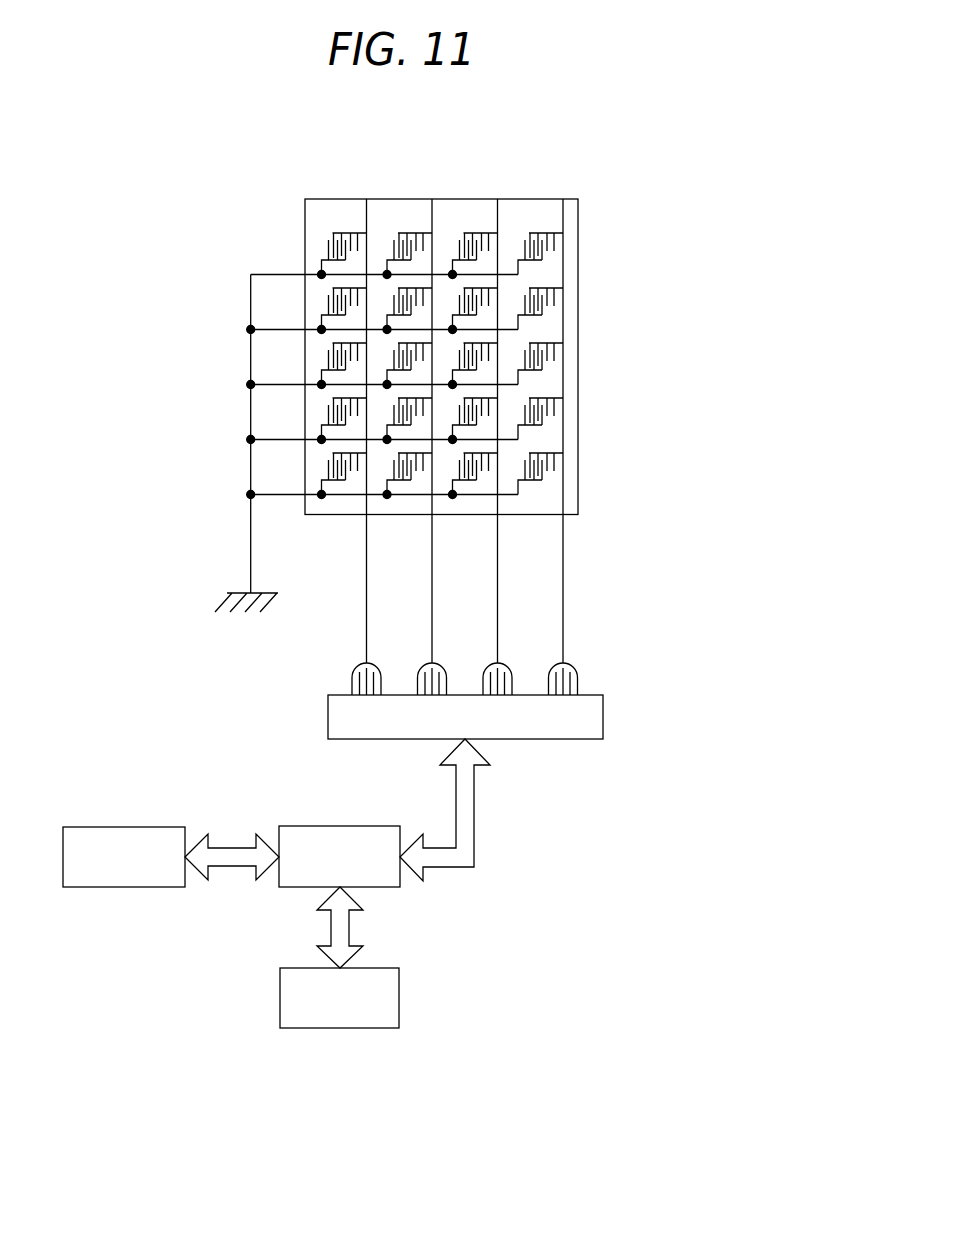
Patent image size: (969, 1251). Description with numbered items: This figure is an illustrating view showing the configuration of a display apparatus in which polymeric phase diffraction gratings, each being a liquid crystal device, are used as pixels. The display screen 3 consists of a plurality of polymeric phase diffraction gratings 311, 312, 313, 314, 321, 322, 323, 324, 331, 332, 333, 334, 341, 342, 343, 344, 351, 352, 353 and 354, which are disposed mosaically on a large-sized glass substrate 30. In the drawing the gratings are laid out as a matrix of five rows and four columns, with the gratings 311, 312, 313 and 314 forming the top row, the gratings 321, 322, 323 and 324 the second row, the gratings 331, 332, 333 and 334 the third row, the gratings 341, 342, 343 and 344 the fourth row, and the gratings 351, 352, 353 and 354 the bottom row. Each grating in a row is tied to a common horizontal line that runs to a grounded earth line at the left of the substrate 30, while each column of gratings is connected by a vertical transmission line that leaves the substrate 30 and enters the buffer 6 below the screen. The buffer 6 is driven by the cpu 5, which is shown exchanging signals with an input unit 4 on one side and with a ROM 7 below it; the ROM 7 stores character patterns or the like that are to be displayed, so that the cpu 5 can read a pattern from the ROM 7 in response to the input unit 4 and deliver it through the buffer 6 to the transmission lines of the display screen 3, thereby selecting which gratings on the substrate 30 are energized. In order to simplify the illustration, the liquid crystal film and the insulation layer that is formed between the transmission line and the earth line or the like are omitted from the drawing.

The display screen 3 is at (600, 200).
The large-sized glass substrate 30 is at (567, 208).
The polymeric phase diffraction grating 311 is at (344, 232).
The polymeric phase diffraction grating 312 is at (411, 232).
The polymeric phase diffraction grating 313 is at (477, 232).
The polymeric phase diffraction grating 314 is at (542, 232).
The polymeric phase diffraction grating 321 is at (330, 302).
The polymeric phase diffraction grating 322 is at (400, 288).
The polymeric phase diffraction grating 323 is at (485, 296).
The polymeric phase diffraction grating 324 is at (553, 301).
The polymeric phase diffraction grating 331 is at (330, 358).
The polymeric phase diffraction grating 332 is at (400, 346).
The polymeric phase diffraction grating 333 is at (488, 348).
The polymeric phase diffraction grating 334 is at (553, 357).
The polymeric phase diffraction grating 341 is at (330, 413).
The polymeric phase diffraction grating 342 is at (400, 401).
The polymeric phase diffraction grating 343 is at (488, 403).
The polymeric phase diffraction grating 344 is at (553, 412).
The polymeric phase diffraction grating 351 is at (333, 486).
The polymeric phase diffraction grating 352 is at (402, 486).
The polymeric phase diffraction grating 353 is at (467, 486).
The polymeric phase diffraction grating 354 is at (553, 467).
The input unit 4 is at (118, 888).
The cpu 5 is at (337, 826).
The buffer 6 is at (603, 715).
The ROM 7 is at (340, 1030).